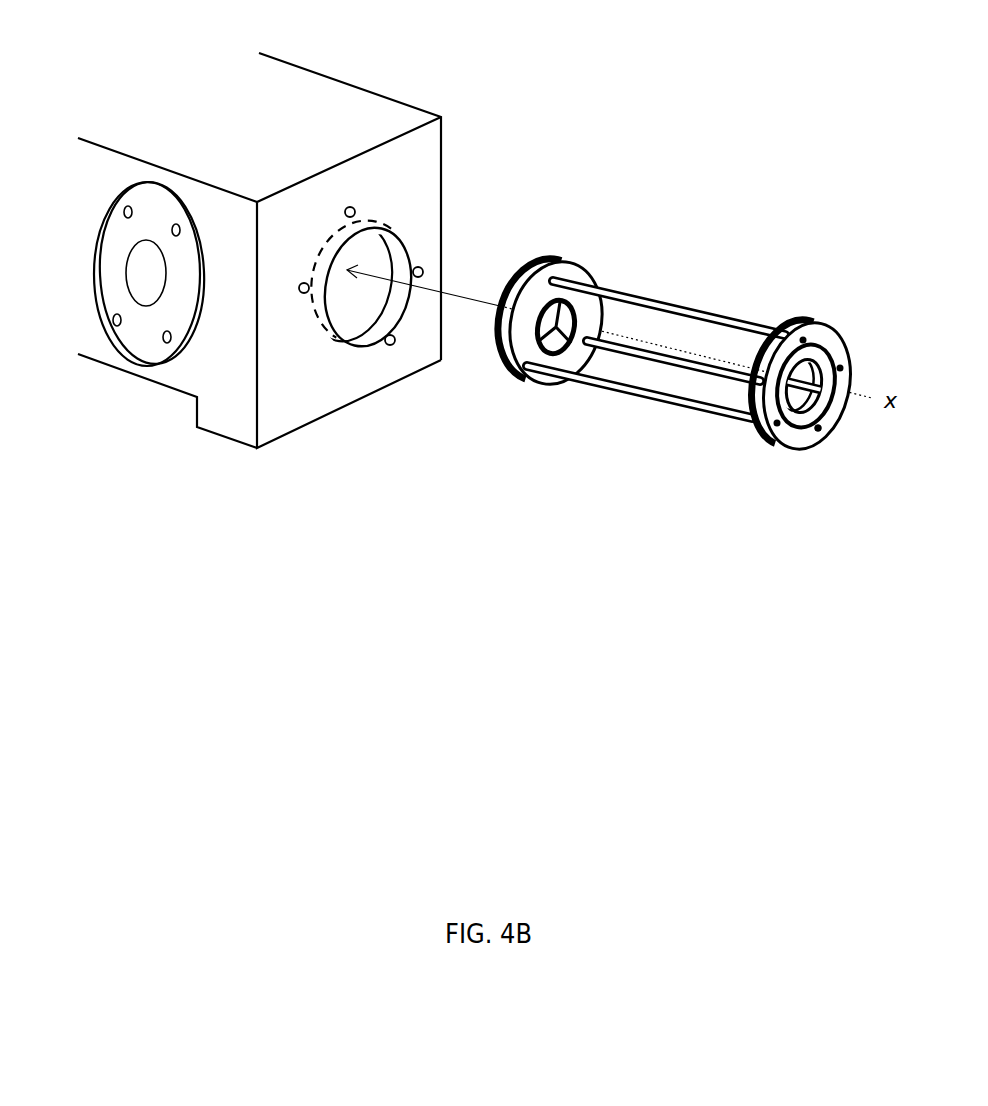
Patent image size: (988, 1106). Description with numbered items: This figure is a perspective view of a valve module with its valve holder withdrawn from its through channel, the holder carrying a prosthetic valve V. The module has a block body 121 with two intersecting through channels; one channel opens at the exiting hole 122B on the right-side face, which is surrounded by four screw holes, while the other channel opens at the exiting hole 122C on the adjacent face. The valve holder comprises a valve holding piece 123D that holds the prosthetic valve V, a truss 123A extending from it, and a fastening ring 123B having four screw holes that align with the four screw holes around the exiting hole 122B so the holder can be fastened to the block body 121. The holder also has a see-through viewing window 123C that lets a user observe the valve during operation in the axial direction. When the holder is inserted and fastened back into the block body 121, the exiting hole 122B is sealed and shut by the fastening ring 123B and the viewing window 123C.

The block body 121 is at (405, 180).
The exiting hole 122B is at (350, 307).
The exiting hole 122C is at (146, 275).
The truss 123A is at (685, 303).
The fastening ring 123B is at (822, 340).
The see-through viewing window 123C is at (820, 420).
The valve holding piece 123D is at (537, 260).
The prosthetic valve V is at (560, 332).